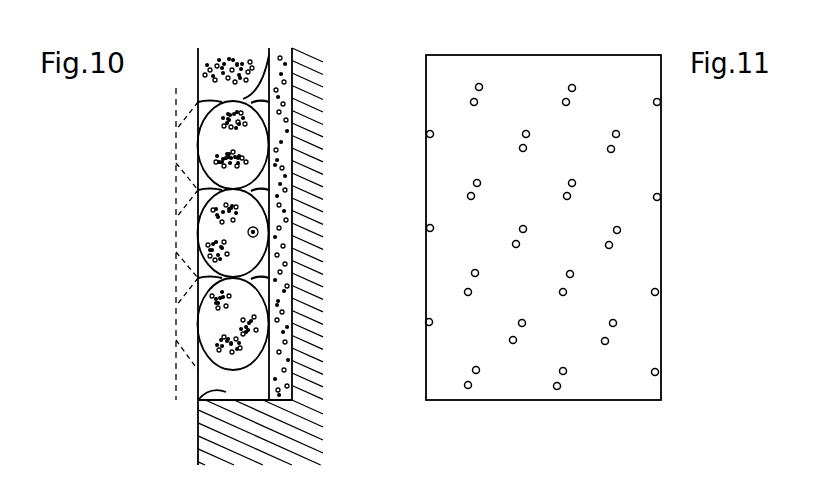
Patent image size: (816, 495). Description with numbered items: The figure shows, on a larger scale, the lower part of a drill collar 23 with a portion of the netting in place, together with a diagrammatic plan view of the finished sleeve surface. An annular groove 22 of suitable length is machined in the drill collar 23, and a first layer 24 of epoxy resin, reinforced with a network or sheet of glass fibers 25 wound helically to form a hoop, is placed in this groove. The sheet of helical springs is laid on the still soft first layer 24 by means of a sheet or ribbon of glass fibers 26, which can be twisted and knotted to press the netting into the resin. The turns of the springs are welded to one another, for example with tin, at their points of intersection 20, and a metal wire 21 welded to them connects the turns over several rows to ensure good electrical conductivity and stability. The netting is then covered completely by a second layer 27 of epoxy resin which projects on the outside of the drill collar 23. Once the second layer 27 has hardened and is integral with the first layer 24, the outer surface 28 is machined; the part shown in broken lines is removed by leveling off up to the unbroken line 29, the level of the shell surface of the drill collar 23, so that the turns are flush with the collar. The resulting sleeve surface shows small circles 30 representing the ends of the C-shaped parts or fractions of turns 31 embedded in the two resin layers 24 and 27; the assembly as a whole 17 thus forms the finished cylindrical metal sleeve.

In FIG. 10, the article 17 is at (73, 238).
In FIG. 10, the points of intersection 20 is at (193, 116).
In FIG. 10, the metal wire 21 is at (258, 229).
In FIG. 10, the annular groove 22 is at (198, 402).
In FIG. 10, the drill collar 23 is at (301, 360).
In FIG. 10, the first layer of epoxy resin 24 is at (287, 377).
In FIG. 10, the glass fibers 25 is at (287, 150).
In FIG. 10, the sheet or ribbon of glass fibers 26 is at (243, 62).
In FIG. 10, the second layer of epoxy resin 27 is at (188, 373).
In FIG. 10, the outer surface 28 is at (176, 183).
In FIG. 10, the unbroken line 29 is at (198, 146).
In FIG. 11, the small circles 30 is at (481, 85).
In FIG. 10, the C-shaped parts or fractions of turns 31 is at (187, 87).